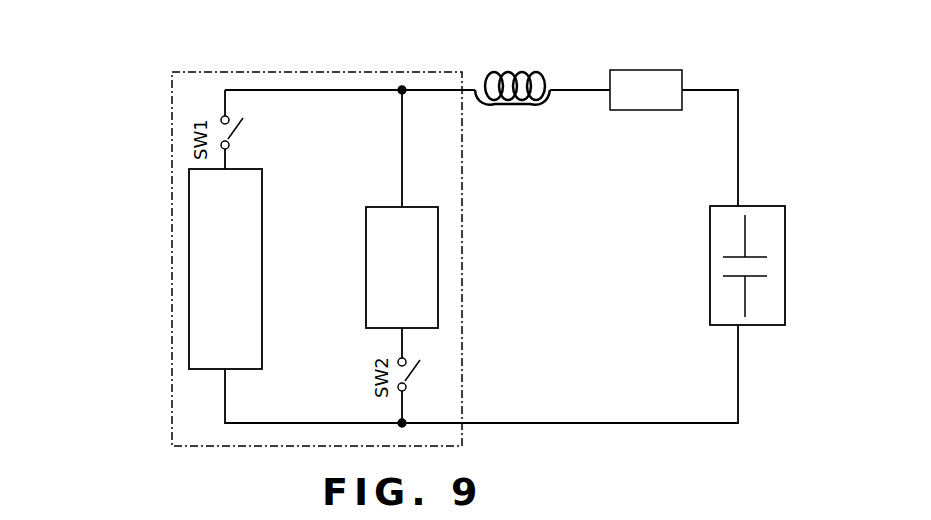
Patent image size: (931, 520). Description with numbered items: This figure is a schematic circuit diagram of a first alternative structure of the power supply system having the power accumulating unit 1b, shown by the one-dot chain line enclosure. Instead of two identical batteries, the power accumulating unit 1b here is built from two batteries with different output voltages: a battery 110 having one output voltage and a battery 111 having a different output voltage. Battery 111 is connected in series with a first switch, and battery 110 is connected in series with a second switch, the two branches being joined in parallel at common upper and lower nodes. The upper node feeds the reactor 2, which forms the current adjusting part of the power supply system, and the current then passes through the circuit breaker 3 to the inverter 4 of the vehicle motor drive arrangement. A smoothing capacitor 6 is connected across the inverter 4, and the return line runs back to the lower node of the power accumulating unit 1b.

The power accumulating unit 1b is at (270, 72).
The reactor 2 is at (505, 72).
The circuit breaker 3 is at (650, 70).
The inverter 4 is at (753, 206).
The smoothing capacitor 6 is at (733, 268).
The battery 110 is at (428, 262).
The battery 111 is at (210, 275).